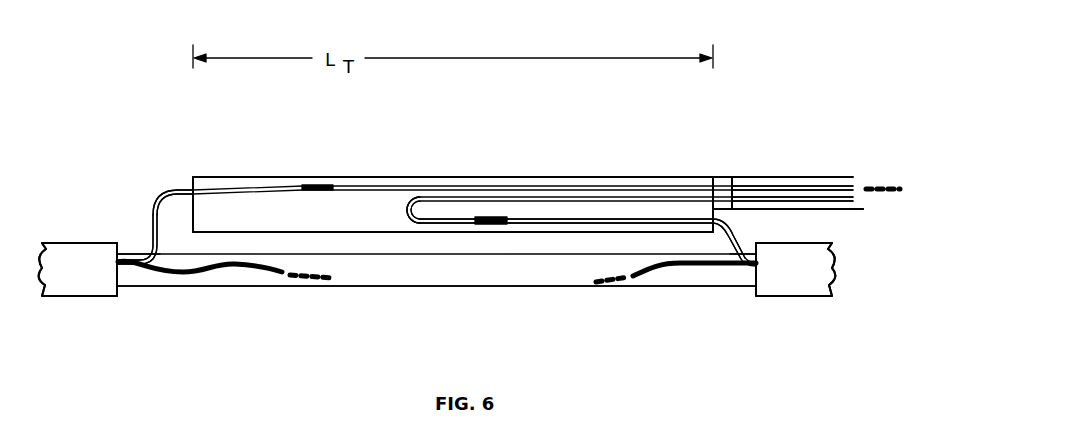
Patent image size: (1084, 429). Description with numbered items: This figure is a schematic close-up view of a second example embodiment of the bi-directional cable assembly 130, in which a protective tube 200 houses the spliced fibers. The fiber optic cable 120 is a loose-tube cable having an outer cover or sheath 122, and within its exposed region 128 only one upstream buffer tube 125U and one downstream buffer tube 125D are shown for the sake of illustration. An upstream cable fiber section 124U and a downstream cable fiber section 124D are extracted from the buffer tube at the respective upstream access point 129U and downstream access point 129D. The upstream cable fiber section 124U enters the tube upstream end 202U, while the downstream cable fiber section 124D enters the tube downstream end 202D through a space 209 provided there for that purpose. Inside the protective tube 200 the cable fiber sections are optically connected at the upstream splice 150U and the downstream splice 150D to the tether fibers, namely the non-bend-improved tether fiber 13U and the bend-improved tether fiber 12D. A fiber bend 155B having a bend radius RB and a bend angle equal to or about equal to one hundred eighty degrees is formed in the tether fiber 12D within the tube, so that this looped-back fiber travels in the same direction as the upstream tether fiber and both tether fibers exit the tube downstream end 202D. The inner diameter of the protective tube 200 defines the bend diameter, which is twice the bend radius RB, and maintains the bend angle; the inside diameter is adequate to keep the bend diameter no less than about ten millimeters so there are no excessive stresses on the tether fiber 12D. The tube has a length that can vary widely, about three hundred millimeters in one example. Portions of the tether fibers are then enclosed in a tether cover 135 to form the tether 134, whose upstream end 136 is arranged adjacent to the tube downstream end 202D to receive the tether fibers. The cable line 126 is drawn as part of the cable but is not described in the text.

The bi-directional cable assembly 130 is at (188, 107).
The protective tube 200 is at (496, 177).
The tether 134 is at (786, 170).
The tether cover 135 is at (808, 176).
The tether upstream end 136 is at (705, 172).
The non-bend-improved tether fiber 13U is at (372, 186).
The bend-improved tether fiber 12D is at (428, 200).
The bend radius RB is at (411, 200).
The fiber bend 155B is at (390, 204).
The upstream splice 150U is at (318, 184).
The downstream splice 150D is at (490, 224).
The tube upstream end 202U is at (190, 190).
The tube downstream end 202D is at (730, 205).
The upstream cable fiber section 124U is at (158, 208).
The downstream cable fiber section 124D is at (560, 220).
The upstream access point 129U is at (142, 246).
The downstream access point 129D is at (745, 272).
The upstream buffer tube 125U is at (172, 273).
The downstream buffer tube 125D is at (703, 270).
The exposed region 128 is at (407, 302).
The cable jacket 126 is at (527, 281).
The fiber optic cable 120 is at (78, 242).
The outer cover 122 is at (80, 296).
The space 209 is at (752, 213).